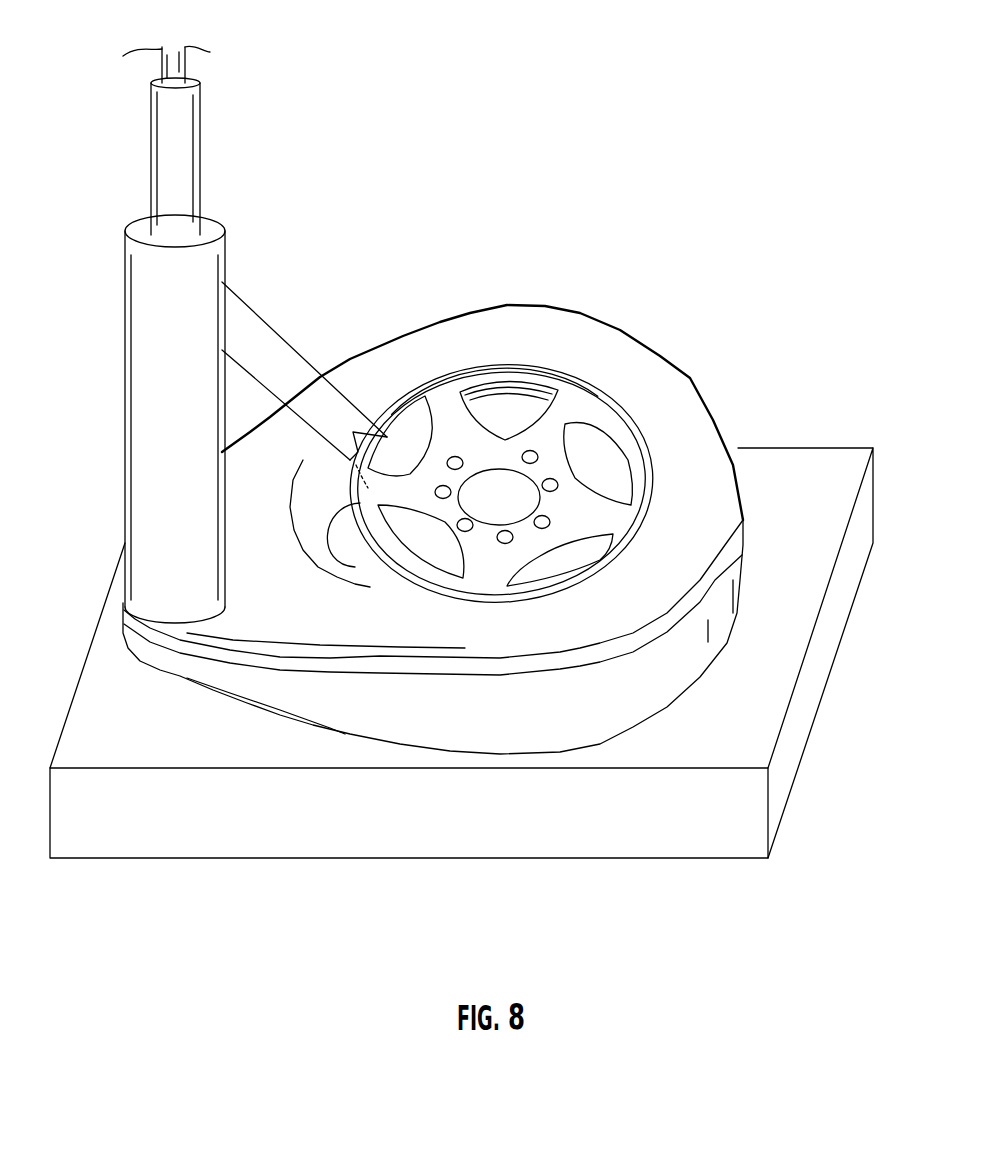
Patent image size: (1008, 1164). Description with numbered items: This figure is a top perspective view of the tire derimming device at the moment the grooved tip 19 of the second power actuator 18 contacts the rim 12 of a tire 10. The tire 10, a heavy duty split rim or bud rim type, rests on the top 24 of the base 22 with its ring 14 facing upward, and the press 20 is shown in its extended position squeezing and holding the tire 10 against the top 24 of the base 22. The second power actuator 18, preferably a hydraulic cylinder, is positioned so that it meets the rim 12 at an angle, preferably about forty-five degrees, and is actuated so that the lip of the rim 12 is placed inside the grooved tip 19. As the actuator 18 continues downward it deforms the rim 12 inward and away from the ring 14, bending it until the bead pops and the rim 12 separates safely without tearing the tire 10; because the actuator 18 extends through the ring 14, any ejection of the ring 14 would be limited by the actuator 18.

The tire 10 is at (613, 352).
The rim 12 is at (513, 373).
The ring 14 is at (620, 413).
The second power actuator 18 is at (277, 347).
The grooved tip 19 is at (372, 410).
The press 20 is at (162, 427).
The base 22 is at (464, 618).
The top 24 is at (828, 477).